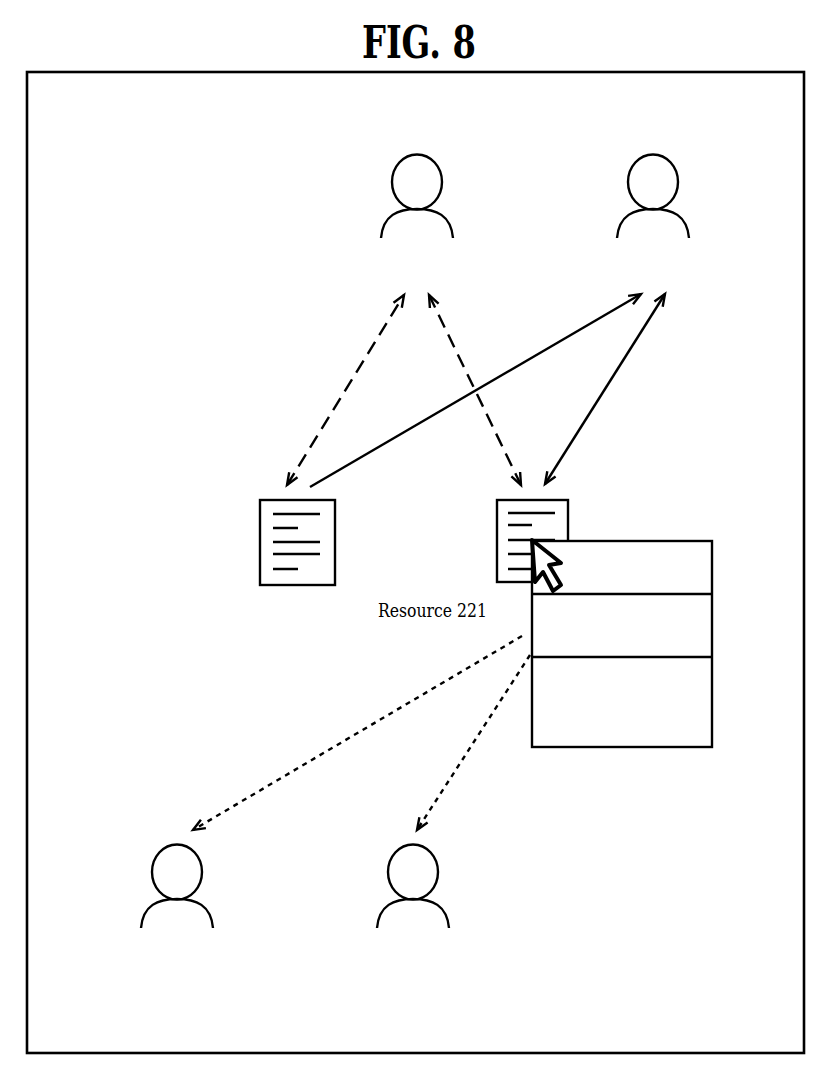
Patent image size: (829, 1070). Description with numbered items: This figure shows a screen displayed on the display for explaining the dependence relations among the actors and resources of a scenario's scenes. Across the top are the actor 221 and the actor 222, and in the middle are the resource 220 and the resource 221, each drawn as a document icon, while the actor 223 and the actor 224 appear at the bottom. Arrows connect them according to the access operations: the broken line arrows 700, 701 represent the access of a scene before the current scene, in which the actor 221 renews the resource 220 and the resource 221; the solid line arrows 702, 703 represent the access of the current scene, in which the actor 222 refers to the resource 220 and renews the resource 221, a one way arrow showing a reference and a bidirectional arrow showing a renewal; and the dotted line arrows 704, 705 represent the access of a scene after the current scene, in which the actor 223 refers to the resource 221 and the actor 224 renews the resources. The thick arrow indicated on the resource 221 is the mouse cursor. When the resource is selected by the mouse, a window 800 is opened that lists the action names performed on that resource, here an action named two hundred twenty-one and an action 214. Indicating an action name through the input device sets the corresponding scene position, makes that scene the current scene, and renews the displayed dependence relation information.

The resource 220 access by actor 221 (dashed arrow) 700 is at (357, 357).
The resource 221 access by actor 221 (dashed arrow) 701 is at (462, 362).
The actor 222 access to resource 220 (solid arrow) 702 is at (405, 433).
The actor 222 access to resource 221 (solid arrow) 703 is at (580, 430).
The action delegation to actor 223 (dotted arrow) 704 is at (305, 762).
The action delegation to actor 224 (dotted arrow) 705 is at (460, 755).
The action menu box 800 is at (622, 614).
The resource 220 is at (270, 568).
The resource 221 is at (418, 214).
The actor 222 is at (656, 214).
The actor 223 is at (178, 911).
The actor 224 is at (417, 911).
The action 214 menu item 214 is at (634, 625).